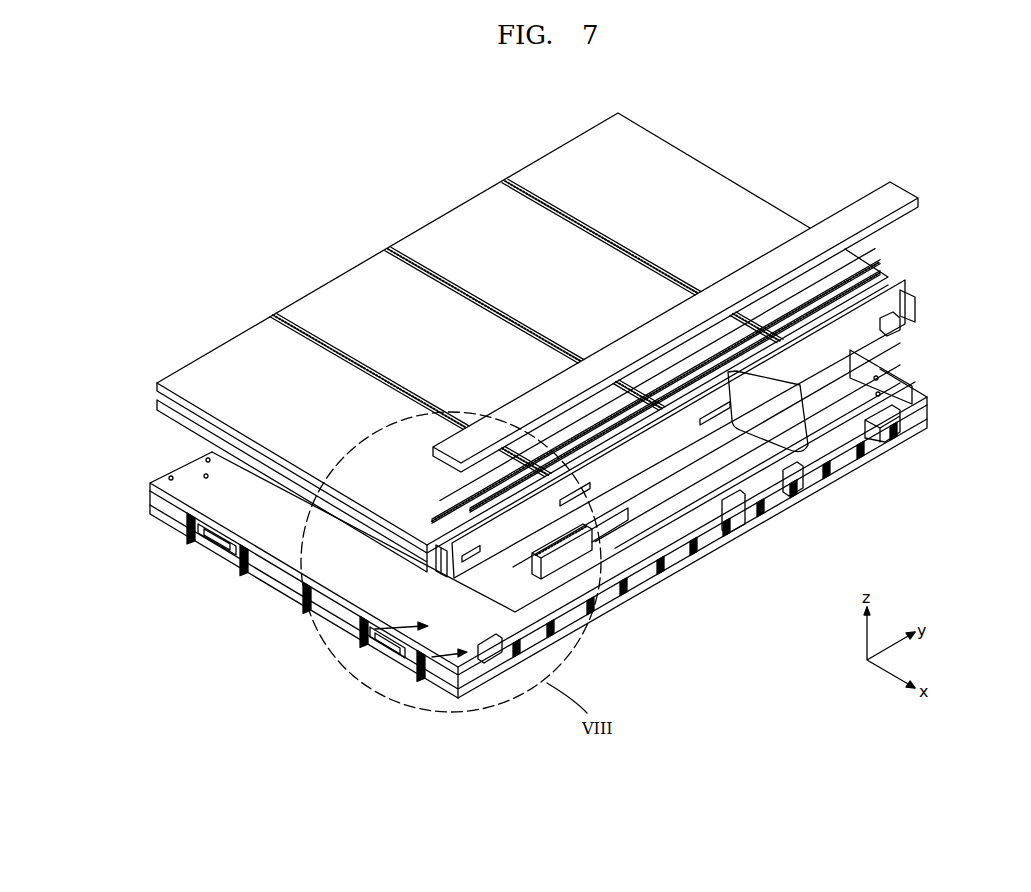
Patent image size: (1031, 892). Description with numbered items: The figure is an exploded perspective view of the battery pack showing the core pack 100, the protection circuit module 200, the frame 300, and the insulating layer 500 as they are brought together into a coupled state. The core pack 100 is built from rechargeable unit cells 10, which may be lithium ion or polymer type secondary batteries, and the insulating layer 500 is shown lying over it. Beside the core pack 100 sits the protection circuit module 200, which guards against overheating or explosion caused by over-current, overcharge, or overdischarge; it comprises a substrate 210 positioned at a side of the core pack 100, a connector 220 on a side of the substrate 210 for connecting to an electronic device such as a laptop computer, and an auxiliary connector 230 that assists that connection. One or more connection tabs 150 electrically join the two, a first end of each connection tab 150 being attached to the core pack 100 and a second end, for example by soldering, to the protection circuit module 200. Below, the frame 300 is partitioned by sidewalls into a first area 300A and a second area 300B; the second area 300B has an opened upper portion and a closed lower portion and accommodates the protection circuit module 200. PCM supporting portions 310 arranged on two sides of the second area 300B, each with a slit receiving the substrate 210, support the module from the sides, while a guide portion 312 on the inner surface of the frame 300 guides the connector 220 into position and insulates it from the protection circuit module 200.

The core pack 100 is at (683, 151).
The unit cell 10 is at (545, 166).
The insulating layer 500 is at (895, 193).
The protection circuit module 200 is at (920, 297).
The substrate 210 is at (913, 317).
The connector 220 is at (860, 367).
The auxiliary connector 230 is at (533, 567).
The connection tab 150 is at (427, 568).
The frame 300 is at (308, 714).
The first area 300A is at (372, 628).
The second area 300B is at (427, 648).
The PCM supporting portion 310 is at (897, 450).
The guide portion 312 is at (800, 500).